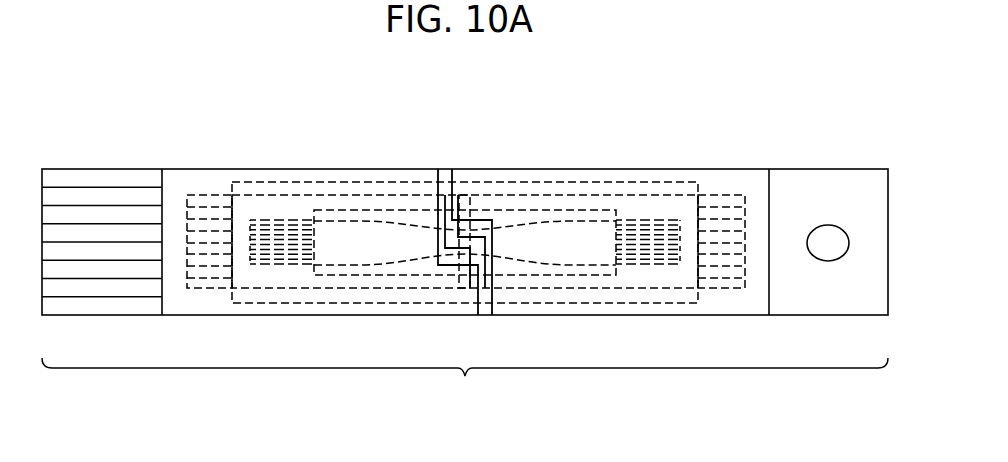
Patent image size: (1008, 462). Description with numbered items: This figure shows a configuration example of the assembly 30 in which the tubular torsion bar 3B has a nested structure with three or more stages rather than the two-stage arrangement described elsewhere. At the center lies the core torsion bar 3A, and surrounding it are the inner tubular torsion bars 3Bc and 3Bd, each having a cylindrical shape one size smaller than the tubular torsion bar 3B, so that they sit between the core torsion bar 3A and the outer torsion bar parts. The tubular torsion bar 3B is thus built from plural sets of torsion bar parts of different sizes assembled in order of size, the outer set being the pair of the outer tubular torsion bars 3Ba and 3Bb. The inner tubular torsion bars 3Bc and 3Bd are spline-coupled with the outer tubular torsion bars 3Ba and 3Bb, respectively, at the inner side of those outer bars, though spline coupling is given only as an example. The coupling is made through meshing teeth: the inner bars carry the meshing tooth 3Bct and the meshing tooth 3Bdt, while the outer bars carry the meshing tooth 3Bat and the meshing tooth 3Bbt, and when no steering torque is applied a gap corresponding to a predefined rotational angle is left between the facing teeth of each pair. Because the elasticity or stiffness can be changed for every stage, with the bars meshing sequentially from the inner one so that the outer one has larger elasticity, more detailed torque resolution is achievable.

The electronic component module 30 is at (810, 138).
The tubular torsion bar 3B is at (465, 383).
The outer tubular torsion bar 3Ba is at (193, 178).
The outer tubular torsion bar 3Bb is at (737, 178).
The inner tubular torsion bar 3Bc is at (272, 200).
The inner tubular torsion bar 3Bd is at (660, 202).
The core torsion bar 3A is at (577, 227).
The meshing tooth 3Bat is at (468, 310).
The meshing tooth 3Bbt is at (464, 177).
The meshing tooth 3Bct is at (462, 253).
The meshing tooth 3Bdt is at (471, 232).